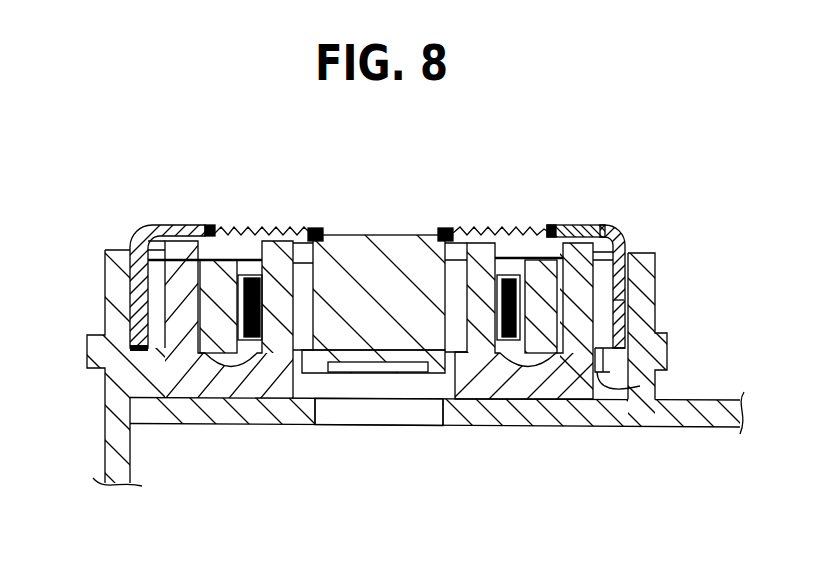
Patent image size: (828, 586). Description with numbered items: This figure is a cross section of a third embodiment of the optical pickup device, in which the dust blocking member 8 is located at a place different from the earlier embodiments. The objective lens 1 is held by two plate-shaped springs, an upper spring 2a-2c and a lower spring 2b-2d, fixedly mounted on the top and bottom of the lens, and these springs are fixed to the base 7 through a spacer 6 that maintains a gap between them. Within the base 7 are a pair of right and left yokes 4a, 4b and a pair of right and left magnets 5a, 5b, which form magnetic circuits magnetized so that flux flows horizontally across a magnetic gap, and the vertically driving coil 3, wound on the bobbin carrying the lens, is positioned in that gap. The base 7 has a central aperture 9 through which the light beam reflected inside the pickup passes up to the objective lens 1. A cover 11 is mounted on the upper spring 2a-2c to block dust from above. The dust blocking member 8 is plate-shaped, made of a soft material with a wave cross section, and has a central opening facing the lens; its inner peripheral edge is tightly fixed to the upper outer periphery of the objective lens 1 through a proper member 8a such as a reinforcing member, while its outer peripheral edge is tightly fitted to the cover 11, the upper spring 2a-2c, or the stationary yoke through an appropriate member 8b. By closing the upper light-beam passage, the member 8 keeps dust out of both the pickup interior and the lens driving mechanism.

The objective lens 1 is at (387, 240).
The plate-shaped spring 2a is at (603, 262).
The plate-shaped spring 2b is at (630, 384).
The plate-shaped spring 2c is at (158, 257).
The plate-shaped spring 2d is at (146, 352).
The vertically driving coil 3 is at (254, 278).
The yoke 4a is at (582, 330).
The yoke 4b is at (232, 386).
The magnet 5a is at (548, 284).
The magnet 5b is at (213, 298).
The spacer 6 is at (620, 300).
The base 7 is at (588, 418).
The dust blocking member 8 is at (271, 227).
The reinforcing member 8a is at (315, 228).
The fitting member 8b is at (209, 225).
The aperture 9 is at (393, 412).
The cover 11 is at (577, 226).